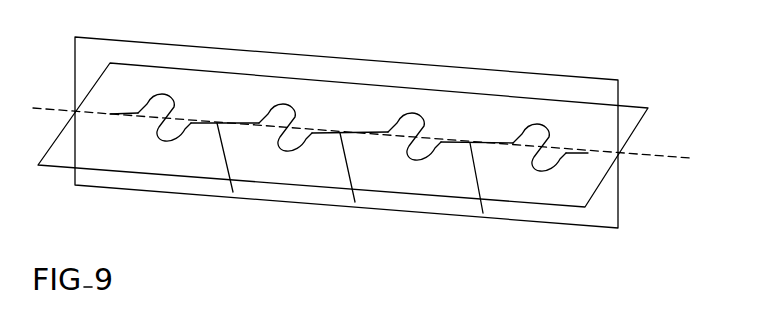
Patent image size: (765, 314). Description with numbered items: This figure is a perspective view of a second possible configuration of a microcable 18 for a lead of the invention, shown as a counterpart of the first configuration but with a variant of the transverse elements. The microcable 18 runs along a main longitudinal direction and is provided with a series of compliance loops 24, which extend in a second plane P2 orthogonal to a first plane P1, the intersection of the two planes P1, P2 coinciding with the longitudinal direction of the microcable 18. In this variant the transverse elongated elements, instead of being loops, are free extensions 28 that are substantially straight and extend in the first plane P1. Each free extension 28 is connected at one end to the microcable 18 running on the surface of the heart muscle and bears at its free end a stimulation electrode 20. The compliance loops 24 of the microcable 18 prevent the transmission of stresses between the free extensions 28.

The microcable 18 is at (312, 89).
The compliance loops 24 is at (300, 112).
The stimulation electrode 20 is at (350, 203).
The free extensions 28 is at (352, 182).
The first plane P1 is at (620, 82).
The second plane P2 is at (641, 128).